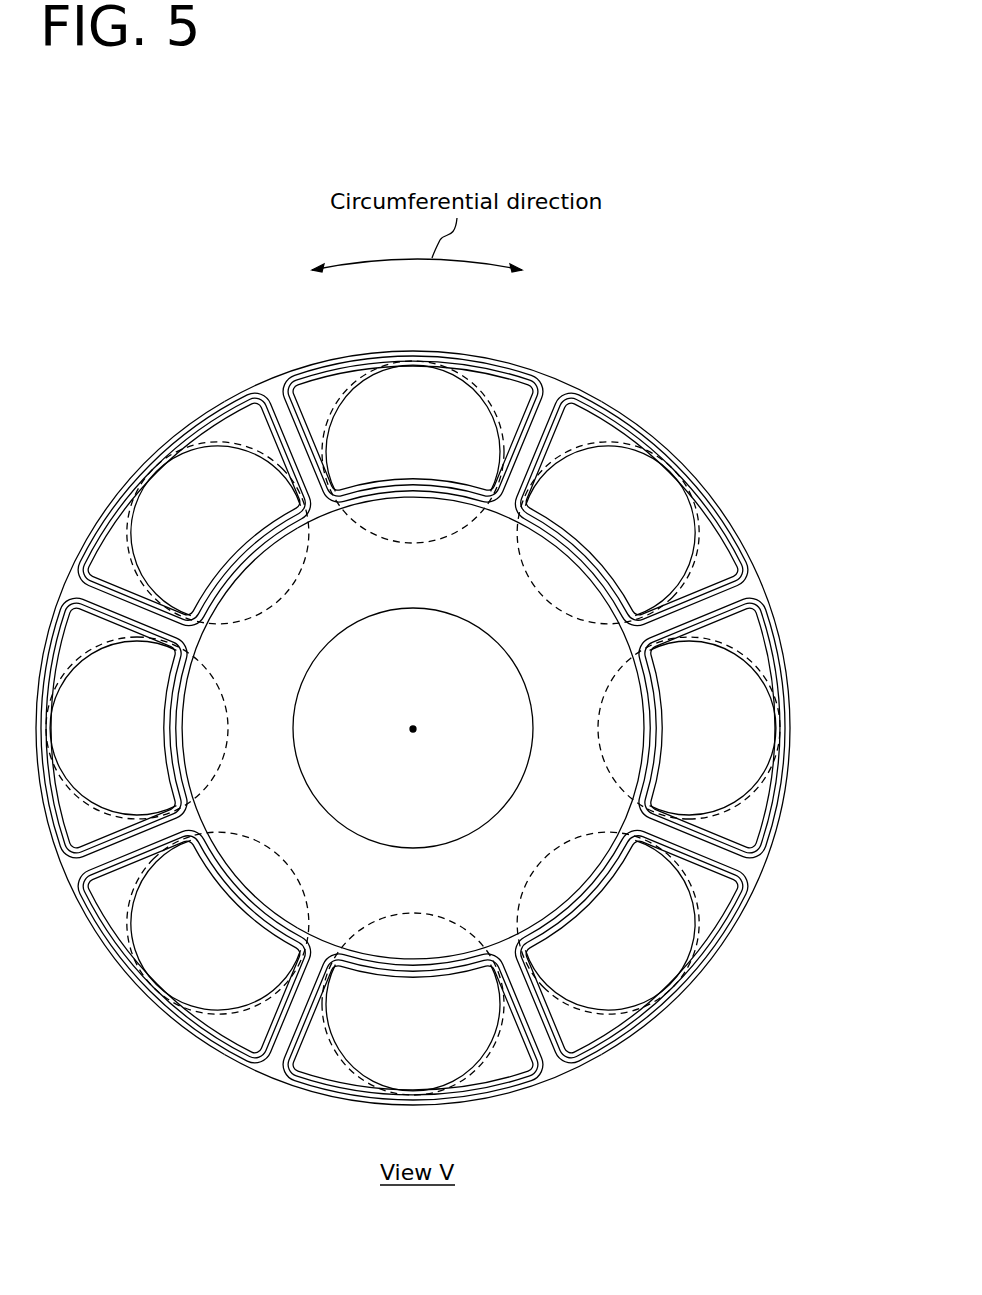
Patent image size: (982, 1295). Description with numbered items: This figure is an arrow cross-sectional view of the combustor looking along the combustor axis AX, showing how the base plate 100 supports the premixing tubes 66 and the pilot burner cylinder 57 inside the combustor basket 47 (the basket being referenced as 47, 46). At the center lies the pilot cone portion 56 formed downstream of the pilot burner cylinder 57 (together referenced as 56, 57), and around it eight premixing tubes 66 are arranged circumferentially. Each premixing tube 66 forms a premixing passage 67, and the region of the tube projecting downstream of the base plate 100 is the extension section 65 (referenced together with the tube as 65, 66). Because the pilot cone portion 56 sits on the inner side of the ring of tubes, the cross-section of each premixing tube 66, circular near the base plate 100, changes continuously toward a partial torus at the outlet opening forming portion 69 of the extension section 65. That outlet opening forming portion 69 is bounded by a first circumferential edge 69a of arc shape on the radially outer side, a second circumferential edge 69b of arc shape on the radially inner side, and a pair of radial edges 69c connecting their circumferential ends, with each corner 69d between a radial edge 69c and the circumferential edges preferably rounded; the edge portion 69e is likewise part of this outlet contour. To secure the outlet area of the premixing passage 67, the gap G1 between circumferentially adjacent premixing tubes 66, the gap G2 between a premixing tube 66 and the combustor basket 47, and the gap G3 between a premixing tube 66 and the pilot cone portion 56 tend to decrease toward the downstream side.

The extension section 65 is at (320, 398).
The premixing tube 66 is at (753, 552).
The combustor basket 47 is at (738, 517).
The housing 46 is at (130, 565).
The pilot cone portion 56 is at (660, 677).
The pilot burner cylinder 57 is at (413, 728).
The premixing passage 67 is at (436, 456).
The outlet opening forming portion 69 is at (518, 395).
The first circumferential edge 69a is at (630, 423).
The second circumferential edge 69b is at (550, 547).
The radial edge 69c is at (497, 513).
The corner 69d is at (570, 415).
The partition wall portion 69e is at (380, 400).
The base plate 100 is at (750, 590).
The gap G1 is at (557, 433).
The gap G2 is at (470, 352).
The gap G3 is at (615, 560).
The axis AX is at (416, 731).